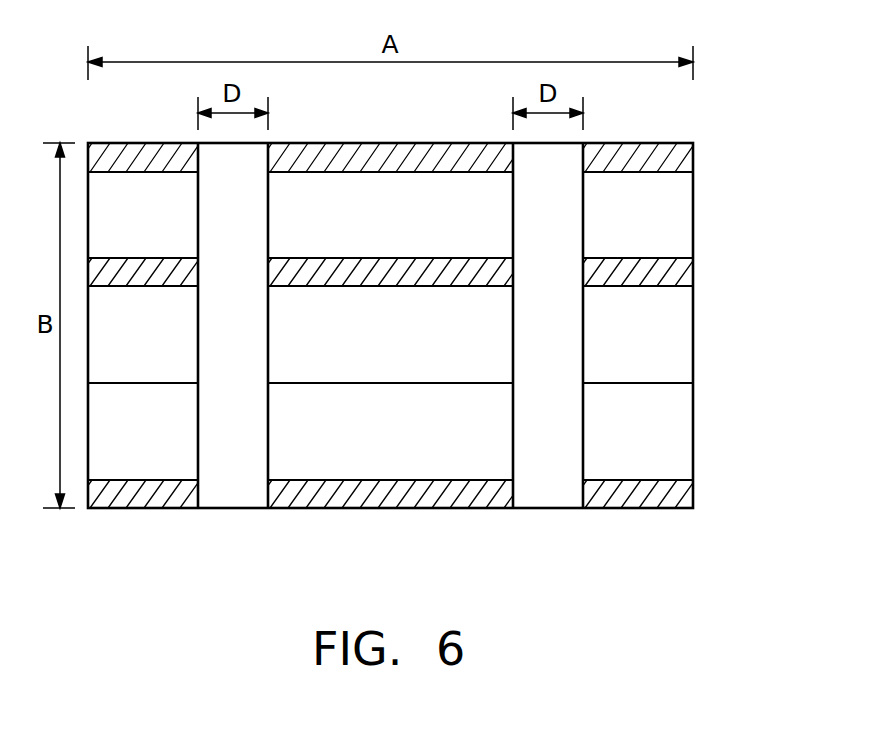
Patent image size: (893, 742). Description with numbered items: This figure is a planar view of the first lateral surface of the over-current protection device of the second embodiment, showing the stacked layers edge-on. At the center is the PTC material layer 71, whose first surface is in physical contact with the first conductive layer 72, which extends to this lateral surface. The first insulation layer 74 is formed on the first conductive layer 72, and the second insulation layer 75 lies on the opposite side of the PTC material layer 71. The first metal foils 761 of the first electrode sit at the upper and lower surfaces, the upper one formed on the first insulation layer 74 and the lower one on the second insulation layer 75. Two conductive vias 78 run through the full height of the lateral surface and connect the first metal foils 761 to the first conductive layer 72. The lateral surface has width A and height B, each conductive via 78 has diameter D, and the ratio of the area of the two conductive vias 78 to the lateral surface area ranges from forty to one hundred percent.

The first metal foils 761 is at (683, 160).
The first insulation layer 74 is at (683, 213).
The first conductive layer 72 is at (683, 272).
The PTC material layer 71 is at (683, 338).
The second insulation layer 75 is at (683, 435).
The conductive vias 78 is at (234, 495).